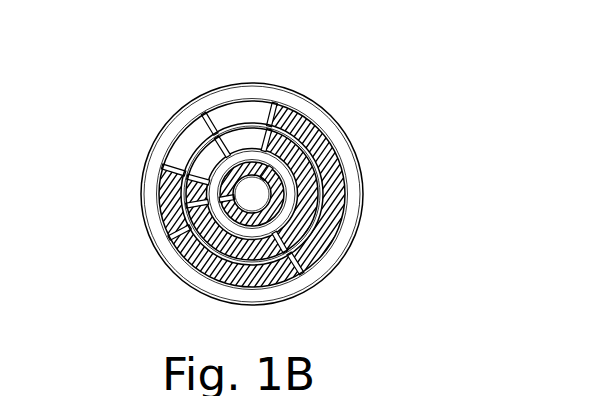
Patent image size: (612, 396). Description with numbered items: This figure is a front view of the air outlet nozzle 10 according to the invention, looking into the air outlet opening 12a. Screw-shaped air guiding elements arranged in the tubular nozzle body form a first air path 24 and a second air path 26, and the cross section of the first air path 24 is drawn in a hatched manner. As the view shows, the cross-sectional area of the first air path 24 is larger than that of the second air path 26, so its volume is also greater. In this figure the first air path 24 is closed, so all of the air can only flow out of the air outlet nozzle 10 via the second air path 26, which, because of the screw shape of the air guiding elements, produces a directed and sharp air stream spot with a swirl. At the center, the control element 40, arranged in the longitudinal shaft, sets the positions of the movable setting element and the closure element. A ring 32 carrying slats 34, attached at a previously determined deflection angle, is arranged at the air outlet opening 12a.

The air outlet nozzle 10 is at (147, 110).
The air outlet opening 12a is at (160, 192).
The first air path 24 is at (172, 212).
The second air path 26 is at (242, 104).
The ring 32 is at (310, 112).
The slats 34 is at (298, 145).
The control element 40 is at (258, 193).